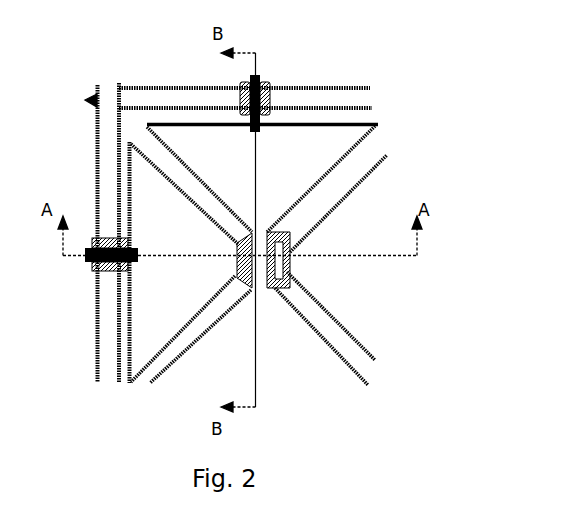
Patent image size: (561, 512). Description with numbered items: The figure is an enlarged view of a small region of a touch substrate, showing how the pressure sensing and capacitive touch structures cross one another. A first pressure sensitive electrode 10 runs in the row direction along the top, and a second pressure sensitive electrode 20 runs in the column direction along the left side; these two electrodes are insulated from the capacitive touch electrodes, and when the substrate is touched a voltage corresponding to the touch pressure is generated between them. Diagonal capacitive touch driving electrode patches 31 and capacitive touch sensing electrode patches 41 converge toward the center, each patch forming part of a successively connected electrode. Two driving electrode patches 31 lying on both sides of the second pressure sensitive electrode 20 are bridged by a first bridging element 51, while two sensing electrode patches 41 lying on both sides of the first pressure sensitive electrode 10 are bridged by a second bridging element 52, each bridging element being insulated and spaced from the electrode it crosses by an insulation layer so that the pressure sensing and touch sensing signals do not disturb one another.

The first pressure sensitive electrode 10 is at (378, 95).
The second pressure sensitive electrode 20 is at (104, 380).
The capacitive touch driving electrode patch 31 is at (147, 198).
The capacitive touch sensing electrode patch 41 is at (302, 147).
The first bridging element 51 is at (92, 268).
The second bridging element 52 is at (259, 78).